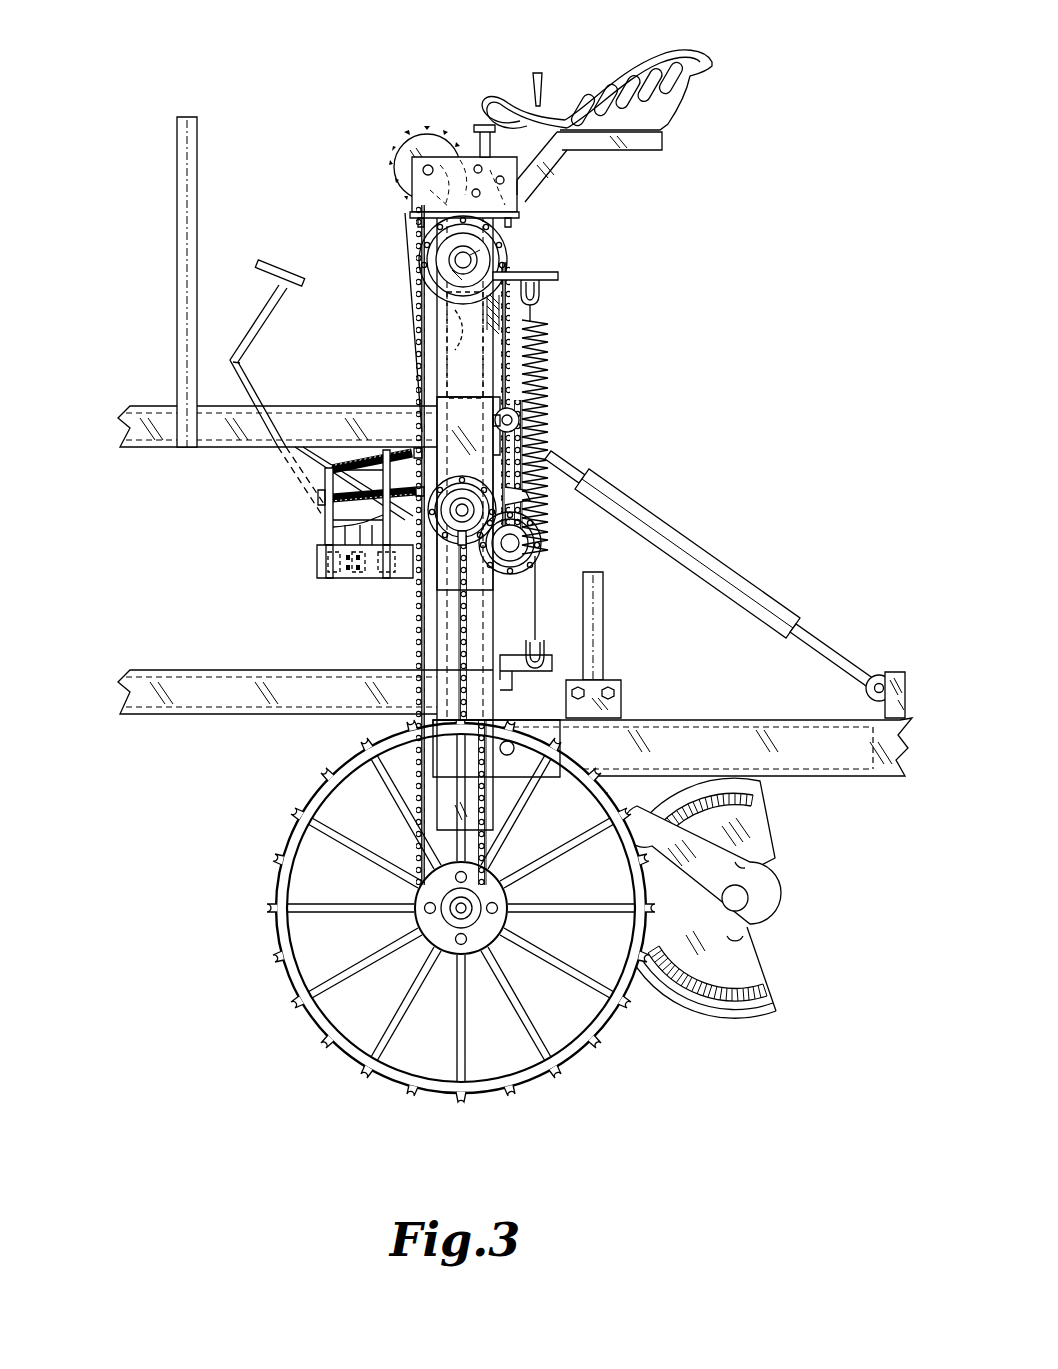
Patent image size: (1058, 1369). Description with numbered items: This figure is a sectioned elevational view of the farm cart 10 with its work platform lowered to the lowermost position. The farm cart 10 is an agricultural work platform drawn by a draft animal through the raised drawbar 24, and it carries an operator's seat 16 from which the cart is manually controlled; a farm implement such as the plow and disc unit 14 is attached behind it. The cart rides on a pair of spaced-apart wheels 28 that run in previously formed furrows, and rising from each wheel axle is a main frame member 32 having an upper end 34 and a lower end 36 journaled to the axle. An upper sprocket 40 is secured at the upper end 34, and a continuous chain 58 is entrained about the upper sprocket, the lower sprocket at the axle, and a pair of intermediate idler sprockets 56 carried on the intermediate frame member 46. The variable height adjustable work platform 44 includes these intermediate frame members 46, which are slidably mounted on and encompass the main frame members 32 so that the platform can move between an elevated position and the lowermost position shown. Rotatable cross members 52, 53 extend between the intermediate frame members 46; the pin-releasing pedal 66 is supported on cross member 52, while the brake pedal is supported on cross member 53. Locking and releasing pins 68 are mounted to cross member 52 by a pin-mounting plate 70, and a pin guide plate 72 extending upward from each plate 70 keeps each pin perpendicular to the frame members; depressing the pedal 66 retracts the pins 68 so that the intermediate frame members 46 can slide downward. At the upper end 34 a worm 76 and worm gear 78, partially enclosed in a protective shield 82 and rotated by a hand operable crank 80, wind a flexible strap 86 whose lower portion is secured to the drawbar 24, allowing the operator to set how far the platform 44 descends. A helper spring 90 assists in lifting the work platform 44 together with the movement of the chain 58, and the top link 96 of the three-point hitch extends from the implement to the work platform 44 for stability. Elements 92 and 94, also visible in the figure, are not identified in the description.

The farm cart 10 is at (630, 333).
The plow and disc unit 14 is at (850, 777).
The operator's seat 16 is at (690, 60).
The raised drawbar 24 is at (148, 450).
The wheels 28 is at (280, 975).
The main frame members 32 is at (440, 822).
The upper end 34 is at (395, 207).
The lower end 36 is at (385, 720).
The upper sprocket 40 is at (445, 310).
The work platform 44 is at (410, 597).
The intermediate frame members 46 is at (420, 632).
The rotatable cross member 52 is at (335, 580).
The rotatable cross member 53 is at (385, 580).
The intermediate idler sprockets 56 is at (540, 548).
The continuous chains 58 is at (420, 345).
The pin-releasing pedal 66 is at (252, 315).
The locking and releasing pins 68 is at (326, 494).
The pin-mounting plate 70 is at (320, 562).
The pin guide plate 72 is at (326, 530).
The worm 76 is at (523, 147).
The worm gear 78 is at (405, 150).
The hand operable crank 80 is at (542, 108).
The protective shield 82 is at (517, 170).
The flexible strap 86 is at (412, 258).
The helper spring 90 is at (545, 405).
The spring bracket 92 is at (545, 275).
The post bracket 94 is at (606, 685).
The top link 96 is at (750, 578).